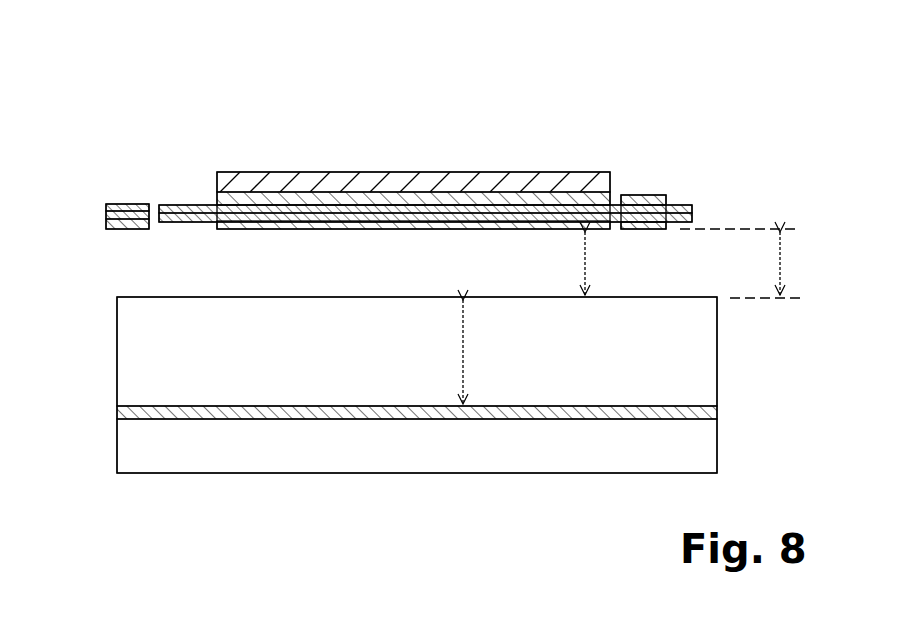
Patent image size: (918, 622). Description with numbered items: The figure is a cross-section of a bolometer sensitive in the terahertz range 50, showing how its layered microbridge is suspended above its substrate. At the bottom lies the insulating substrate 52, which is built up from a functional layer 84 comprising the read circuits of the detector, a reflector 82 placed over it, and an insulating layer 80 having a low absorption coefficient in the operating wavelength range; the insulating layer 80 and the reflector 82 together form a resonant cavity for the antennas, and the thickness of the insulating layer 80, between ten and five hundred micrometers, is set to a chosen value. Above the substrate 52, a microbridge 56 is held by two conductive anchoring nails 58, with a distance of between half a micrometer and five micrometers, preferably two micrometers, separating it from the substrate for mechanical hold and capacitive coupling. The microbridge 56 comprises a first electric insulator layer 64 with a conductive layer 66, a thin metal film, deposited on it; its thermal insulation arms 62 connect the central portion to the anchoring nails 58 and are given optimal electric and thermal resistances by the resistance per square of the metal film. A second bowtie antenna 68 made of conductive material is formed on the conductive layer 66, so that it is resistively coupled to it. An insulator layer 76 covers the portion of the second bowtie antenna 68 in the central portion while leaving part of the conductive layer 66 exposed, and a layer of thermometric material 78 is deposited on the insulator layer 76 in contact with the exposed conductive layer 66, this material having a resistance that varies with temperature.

The bolometer sensitive in the terahertz range 50 is at (113, 73).
The insulating substrate 52 is at (97, 296).
The microbridge 56 is at (490, 163).
The conductive anchoring nails 58 is at (648, 197).
The thermal insulation arms 62 is at (120, 200).
The first electric insulator layer 64 is at (106, 223).
The conductive layer 66 is at (106, 211).
The second bowtie antenna 68 is at (180, 203).
The insulator layer 76 is at (576, 200).
The layer of thermometric material 78 is at (292, 176).
The insulating layer 80 is at (680, 350).
The reflector 82 is at (712, 413).
The functional layer 84 is at (697, 450).